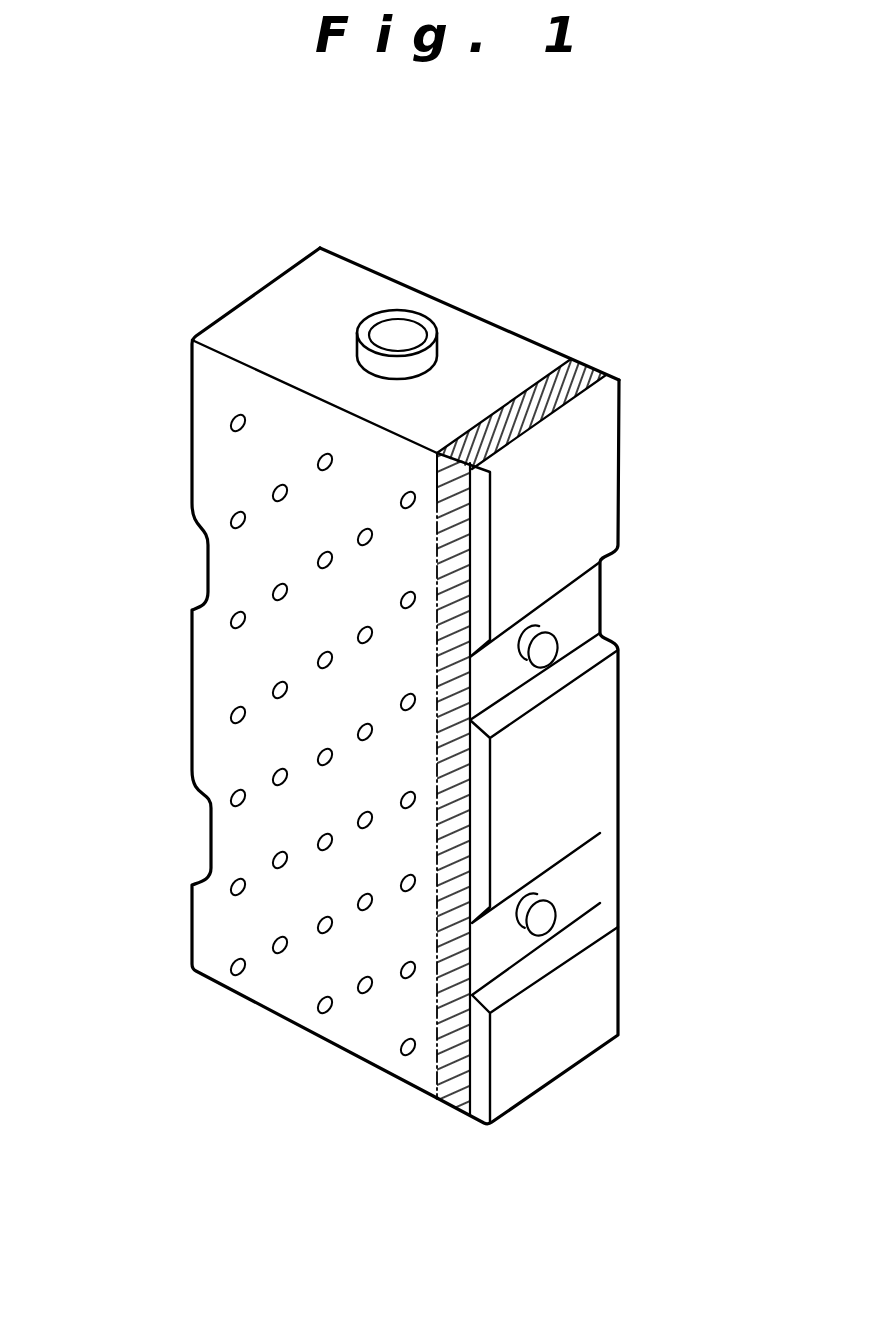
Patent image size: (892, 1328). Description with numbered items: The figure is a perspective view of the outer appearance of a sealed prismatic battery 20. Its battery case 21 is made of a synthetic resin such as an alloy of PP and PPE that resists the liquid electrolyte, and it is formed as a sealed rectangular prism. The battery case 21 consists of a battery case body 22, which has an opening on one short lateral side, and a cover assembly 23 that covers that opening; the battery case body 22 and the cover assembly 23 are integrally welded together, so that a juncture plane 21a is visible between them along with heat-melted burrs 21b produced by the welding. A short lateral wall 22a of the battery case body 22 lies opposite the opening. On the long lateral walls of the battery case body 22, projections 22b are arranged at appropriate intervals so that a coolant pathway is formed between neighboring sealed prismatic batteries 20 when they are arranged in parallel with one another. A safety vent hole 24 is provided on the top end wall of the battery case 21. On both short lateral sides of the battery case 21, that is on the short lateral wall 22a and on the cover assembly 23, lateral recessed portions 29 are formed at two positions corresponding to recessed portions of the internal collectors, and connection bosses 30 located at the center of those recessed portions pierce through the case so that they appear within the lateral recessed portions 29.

The sealed prismatic battery 20 is at (180, 465).
The battery case 21 is at (482, 1202).
The juncture plane 21a is at (552, 372).
The heat-melted burrs 21b is at (497, 402).
The battery case body 22 is at (370, 1037).
The short lateral wall 22a is at (192, 690).
The projections 22b is at (238, 976).
The cover assembly 23 is at (527, 1075).
The safety vent hole 24 is at (428, 327).
The lateral recessed portions 29 is at (207, 557).
The connection bosses 30 is at (548, 662).